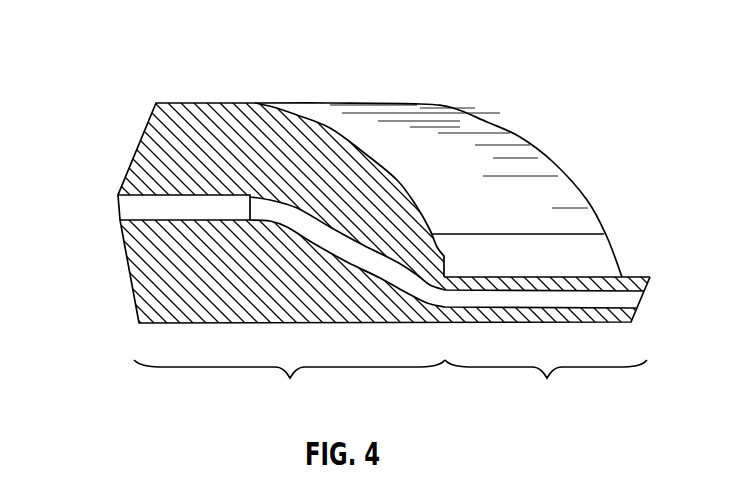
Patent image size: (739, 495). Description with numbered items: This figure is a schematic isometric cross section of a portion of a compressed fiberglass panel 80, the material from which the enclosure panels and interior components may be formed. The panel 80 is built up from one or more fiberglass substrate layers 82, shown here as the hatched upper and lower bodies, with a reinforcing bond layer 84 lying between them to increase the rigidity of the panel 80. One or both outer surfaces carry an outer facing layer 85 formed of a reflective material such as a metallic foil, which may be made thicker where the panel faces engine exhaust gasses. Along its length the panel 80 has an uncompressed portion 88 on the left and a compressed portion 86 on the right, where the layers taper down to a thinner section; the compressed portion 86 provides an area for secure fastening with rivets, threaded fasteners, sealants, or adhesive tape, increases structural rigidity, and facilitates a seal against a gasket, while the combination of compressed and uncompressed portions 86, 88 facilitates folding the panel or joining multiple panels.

The fiberglass panel 80 is at (135, 47).
The fiberglass substrate layer 82 is at (158, 126).
The reinforcing bond layer 84 is at (127, 205).
The outer facing layer 85 is at (508, 140).
The compressed portion 86 is at (546, 385).
The uncompressed portion 88 is at (289, 385).